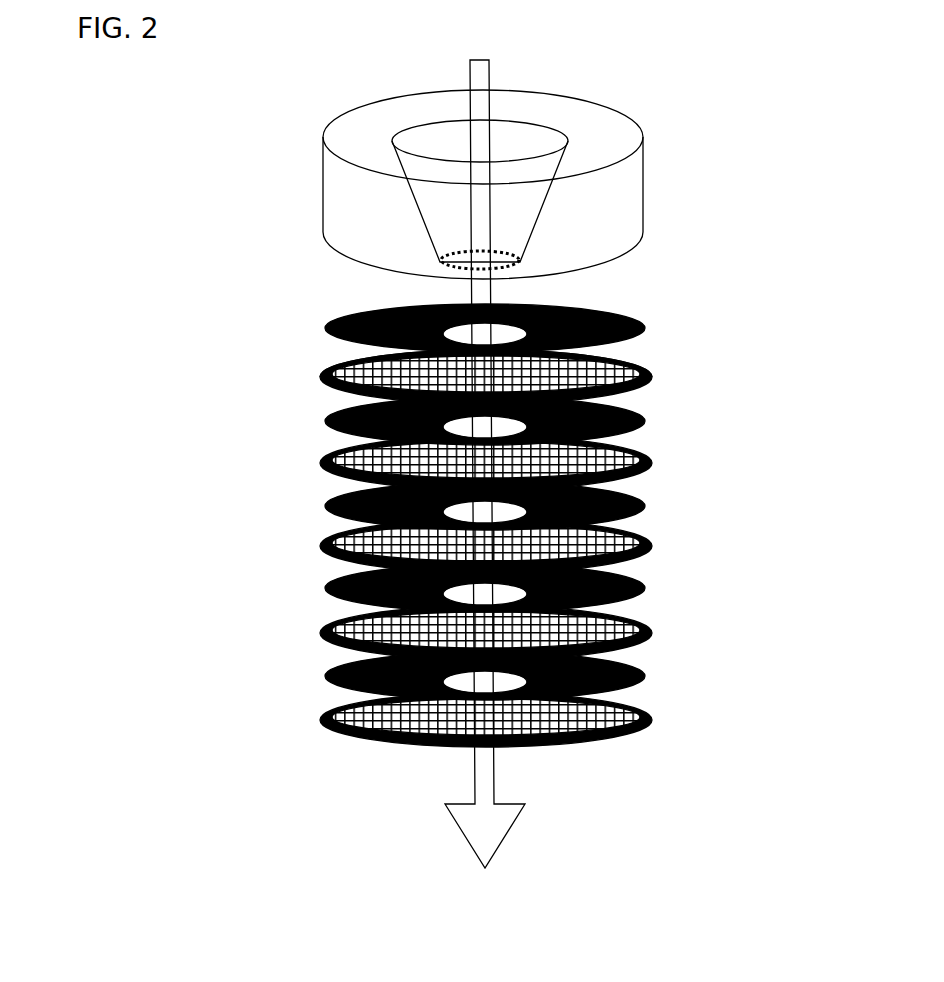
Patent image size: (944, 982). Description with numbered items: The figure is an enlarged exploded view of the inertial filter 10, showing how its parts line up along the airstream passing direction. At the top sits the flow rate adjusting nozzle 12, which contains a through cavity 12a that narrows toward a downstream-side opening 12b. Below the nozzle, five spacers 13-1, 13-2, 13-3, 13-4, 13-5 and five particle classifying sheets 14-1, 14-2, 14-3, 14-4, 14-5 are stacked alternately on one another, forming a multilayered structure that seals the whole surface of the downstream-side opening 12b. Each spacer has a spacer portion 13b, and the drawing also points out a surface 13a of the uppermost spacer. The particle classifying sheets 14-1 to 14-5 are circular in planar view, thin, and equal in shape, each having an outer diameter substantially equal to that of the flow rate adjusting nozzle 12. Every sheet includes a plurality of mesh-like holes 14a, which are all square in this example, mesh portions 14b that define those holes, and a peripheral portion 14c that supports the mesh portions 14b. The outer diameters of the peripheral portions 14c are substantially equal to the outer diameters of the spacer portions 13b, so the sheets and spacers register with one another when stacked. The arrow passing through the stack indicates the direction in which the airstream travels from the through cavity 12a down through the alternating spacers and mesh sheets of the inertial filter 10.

The filter device 10 is at (818, 152).
The flow rate adjusting nozzle 12 is at (526, 142).
The through cavity 12a is at (522, 138).
The downstream-side opening 12b is at (505, 255).
The spacer 13-1 is at (518, 302).
The spacer 13-2 is at (643, 425).
The spacer 13-3 is at (645, 500).
The spacer 13-4 is at (645, 580).
The spacer 13-5 is at (647, 677).
The plate body 13a is at (418, 303).
The spacer portion 13b is at (597, 307).
The particle classifying sheet 14-1 is at (483, 372).
The particle classifying sheet 14-2 is at (320, 458).
The particle classifying sheet 14-3 is at (320, 543).
The particle classifying sheet 14-4 is at (320, 630).
The particle classifying sheet 14-5 is at (322, 712).
The mesh-like hole 14a is at (643, 357).
The mesh portion 14b is at (652, 375).
The peripheral portion 14c is at (327, 362).